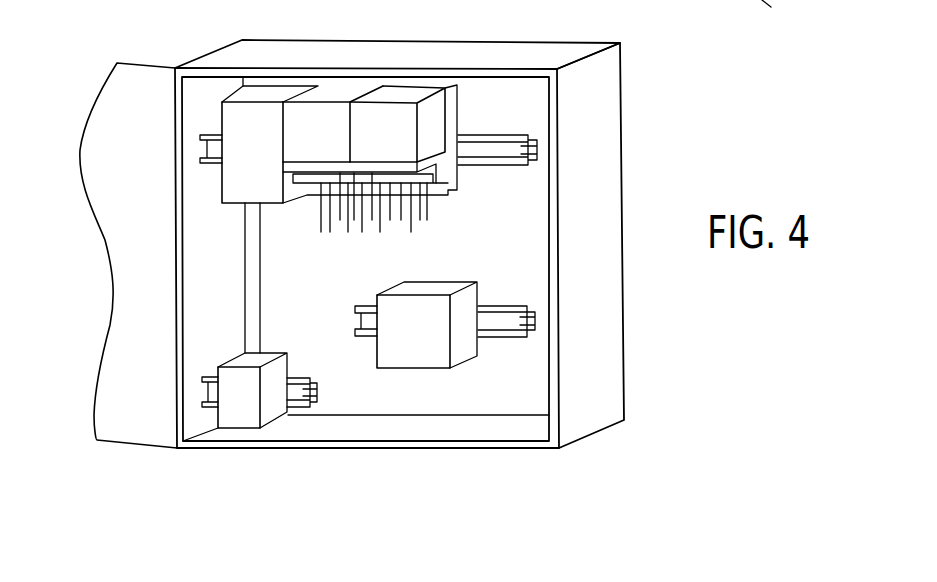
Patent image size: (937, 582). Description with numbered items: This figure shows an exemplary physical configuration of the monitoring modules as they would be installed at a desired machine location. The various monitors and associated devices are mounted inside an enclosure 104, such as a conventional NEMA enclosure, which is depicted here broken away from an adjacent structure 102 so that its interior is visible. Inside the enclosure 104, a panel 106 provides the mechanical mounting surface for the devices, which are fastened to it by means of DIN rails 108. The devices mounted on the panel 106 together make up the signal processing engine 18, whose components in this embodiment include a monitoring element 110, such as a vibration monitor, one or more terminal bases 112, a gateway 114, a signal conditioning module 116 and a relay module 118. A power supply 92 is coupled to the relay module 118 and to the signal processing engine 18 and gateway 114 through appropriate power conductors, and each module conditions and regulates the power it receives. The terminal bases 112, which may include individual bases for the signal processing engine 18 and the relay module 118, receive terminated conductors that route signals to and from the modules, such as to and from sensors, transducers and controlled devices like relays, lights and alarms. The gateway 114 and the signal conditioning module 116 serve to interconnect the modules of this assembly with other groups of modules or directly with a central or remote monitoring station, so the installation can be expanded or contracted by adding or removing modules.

The signal processing engine 18 is at (650, 134).
The power supply 92 is at (465, 346).
The support structure 102 is at (786, 11).
The enclosure 104 is at (603, 80).
The panel 106 is at (535, 288).
The DIN rails 108 is at (522, 150).
The monitoring element 110 is at (315, 120).
The terminal base 112 is at (452, 108).
The gateway 114 is at (238, 177).
The signal conditioning module 116 is at (237, 417).
The relay module 118 is at (387, 115).